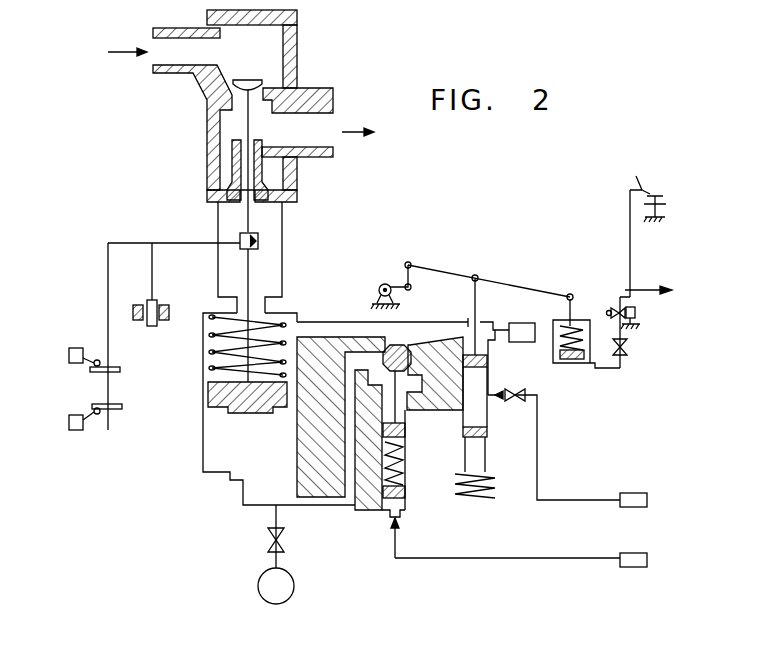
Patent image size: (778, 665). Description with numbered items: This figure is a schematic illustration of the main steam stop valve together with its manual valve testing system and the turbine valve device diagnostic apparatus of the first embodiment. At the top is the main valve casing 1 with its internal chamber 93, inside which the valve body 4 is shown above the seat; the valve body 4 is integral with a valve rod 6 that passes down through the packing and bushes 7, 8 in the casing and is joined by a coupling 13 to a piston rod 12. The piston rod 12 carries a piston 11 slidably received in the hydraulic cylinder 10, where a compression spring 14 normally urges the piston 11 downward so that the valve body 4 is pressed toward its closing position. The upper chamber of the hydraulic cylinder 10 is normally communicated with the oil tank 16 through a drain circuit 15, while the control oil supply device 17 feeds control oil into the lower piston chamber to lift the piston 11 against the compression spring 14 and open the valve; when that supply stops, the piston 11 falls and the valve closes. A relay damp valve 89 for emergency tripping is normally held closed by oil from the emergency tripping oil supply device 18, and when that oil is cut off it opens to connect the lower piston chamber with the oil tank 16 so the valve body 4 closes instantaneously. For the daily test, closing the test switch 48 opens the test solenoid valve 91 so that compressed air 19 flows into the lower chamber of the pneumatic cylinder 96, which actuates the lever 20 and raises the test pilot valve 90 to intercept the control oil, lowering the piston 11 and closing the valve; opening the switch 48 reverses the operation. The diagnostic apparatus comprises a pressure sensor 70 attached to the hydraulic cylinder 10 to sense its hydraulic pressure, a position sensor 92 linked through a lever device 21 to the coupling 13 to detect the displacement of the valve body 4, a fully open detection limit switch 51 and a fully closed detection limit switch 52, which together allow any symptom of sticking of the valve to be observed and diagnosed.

The main valve casing 1 is at (300, 93).
The valve chamber 93 is at (270, 62).
The valve body 4 is at (247, 80).
The gland 7 is at (285, 170).
The bush 8 is at (275, 190).
The valve rod 6 is at (252, 216).
The coupling 13 is at (258, 241).
The piston rod 12 is at (247, 292).
The lever device 21 is at (118, 243).
The position sensor 92 is at (152, 306).
The fully open detection limit switch 51 is at (76, 348).
The fully closed detection limit switch 52 is at (76, 430).
The hydraulic cylinder 10 is at (205, 455).
The compression spring 14 is at (287, 323).
The piston 11 is at (210, 391).
The drain circuit 15 is at (333, 321).
The pressure sensor 70 is at (294, 586).
The relay damp valve 89 is at (400, 345).
The test pilot valve 90 is at (487, 434).
The lever 20 is at (500, 285).
The oil tank 16 is at (513, 323).
The control oil supply device 17 is at (647, 500).
The emergency tripping oil supply device 18 is at (647, 560).
The pneumatic cylinder 96 is at (572, 378).
The test solenoid valve 91 is at (612, 312).
The compressed air 19 is at (642, 290).
The test switch 48 is at (648, 184).